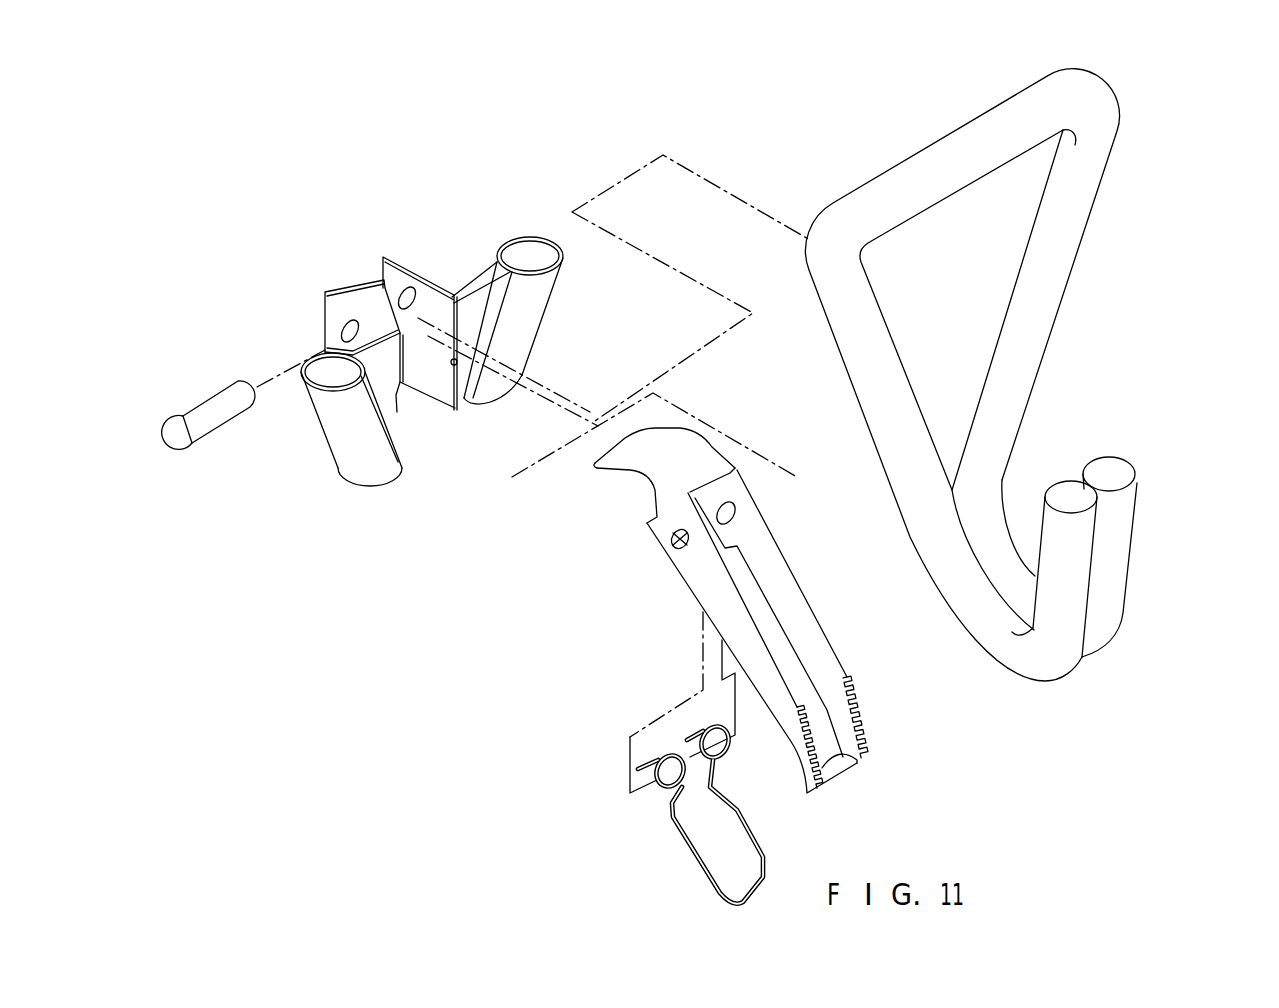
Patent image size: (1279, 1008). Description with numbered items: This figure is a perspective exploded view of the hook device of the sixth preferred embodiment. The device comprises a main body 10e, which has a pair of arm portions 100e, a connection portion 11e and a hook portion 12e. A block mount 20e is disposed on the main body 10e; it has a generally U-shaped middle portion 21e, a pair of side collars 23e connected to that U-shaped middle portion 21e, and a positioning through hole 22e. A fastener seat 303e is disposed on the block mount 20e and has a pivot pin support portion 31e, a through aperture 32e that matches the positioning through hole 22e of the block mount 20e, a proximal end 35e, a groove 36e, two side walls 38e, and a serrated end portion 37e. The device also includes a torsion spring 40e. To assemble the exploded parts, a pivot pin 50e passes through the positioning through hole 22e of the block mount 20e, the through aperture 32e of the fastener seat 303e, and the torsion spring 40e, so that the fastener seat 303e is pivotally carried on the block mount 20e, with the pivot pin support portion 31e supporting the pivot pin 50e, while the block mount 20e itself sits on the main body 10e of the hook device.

The main body 10e is at (1027, 375).
The triangular loop of rod 100e is at (1073, 272).
The connection portion 11e is at (953, 490).
The hook portion 12e is at (1128, 570).
The block mount 20e is at (460, 307).
The generally U-shaped middle portion 21e is at (370, 300).
The positioning through hole 22e is at (412, 298).
The side collars 23e is at (525, 320).
The pivot pin 50e is at (205, 413).
The fastener seat 303e is at (751, 569).
The proximal end 35e is at (627, 454).
The pivot pin support portion 31e is at (660, 528).
The through aperture 32e is at (682, 550).
The side walls 38e is at (760, 557).
The groove 36e is at (783, 640).
The serrated end portion 37e is at (867, 718).
The torsion spring 40e is at (641, 826).